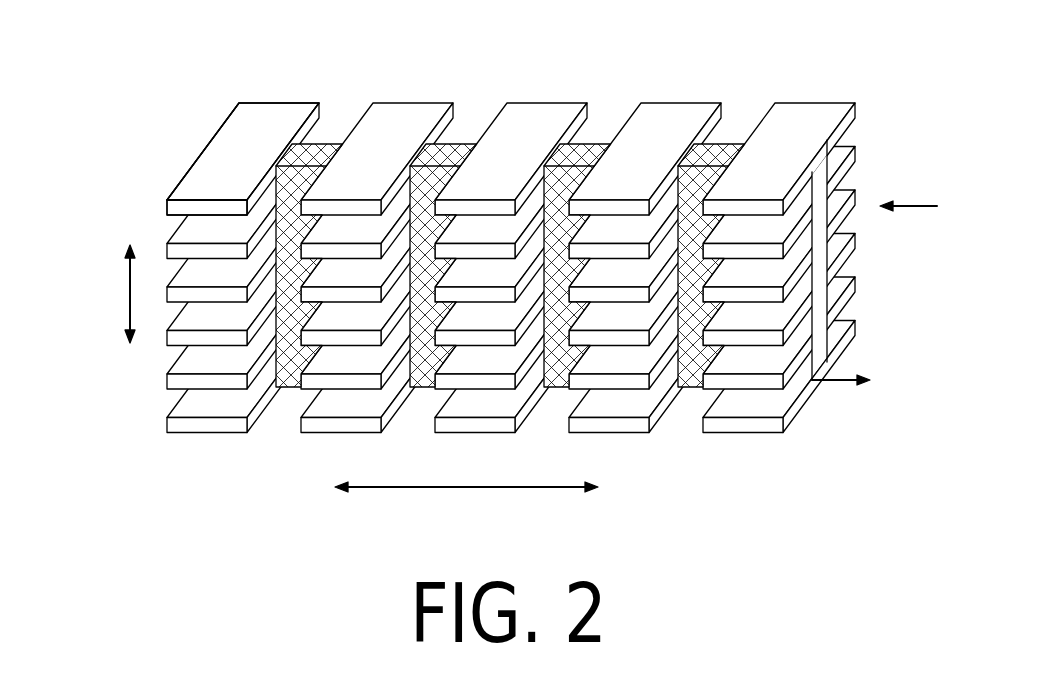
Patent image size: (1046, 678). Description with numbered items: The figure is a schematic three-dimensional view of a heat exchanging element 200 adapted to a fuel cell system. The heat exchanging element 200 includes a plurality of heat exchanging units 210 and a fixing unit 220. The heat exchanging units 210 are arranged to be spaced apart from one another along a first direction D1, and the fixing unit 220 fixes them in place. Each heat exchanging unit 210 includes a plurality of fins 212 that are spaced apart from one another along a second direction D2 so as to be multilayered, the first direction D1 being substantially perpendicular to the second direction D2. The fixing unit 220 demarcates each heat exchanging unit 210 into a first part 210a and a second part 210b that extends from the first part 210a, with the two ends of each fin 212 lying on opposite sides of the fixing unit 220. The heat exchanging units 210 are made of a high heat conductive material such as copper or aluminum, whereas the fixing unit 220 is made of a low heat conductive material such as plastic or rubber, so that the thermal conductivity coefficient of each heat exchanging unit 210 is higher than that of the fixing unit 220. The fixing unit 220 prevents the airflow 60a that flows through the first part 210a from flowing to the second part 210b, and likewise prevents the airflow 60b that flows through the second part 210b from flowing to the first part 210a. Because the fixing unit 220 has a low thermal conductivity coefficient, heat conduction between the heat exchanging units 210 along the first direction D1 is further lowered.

The heat exchanging element 200 is at (465, 278).
The heat exchanging unit 210 is at (465, 217).
The first part 210a is at (228, 118).
The second part 210b is at (188, 171).
The fin 212 is at (167, 205).
The fixing unit 220 is at (315, 157).
The airflow 60a is at (915, 203).
The airflow 60b is at (834, 383).
The first direction D1 is at (466, 504).
The second direction D2 is at (111, 294).